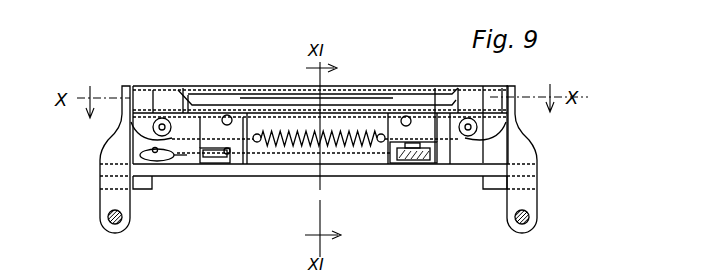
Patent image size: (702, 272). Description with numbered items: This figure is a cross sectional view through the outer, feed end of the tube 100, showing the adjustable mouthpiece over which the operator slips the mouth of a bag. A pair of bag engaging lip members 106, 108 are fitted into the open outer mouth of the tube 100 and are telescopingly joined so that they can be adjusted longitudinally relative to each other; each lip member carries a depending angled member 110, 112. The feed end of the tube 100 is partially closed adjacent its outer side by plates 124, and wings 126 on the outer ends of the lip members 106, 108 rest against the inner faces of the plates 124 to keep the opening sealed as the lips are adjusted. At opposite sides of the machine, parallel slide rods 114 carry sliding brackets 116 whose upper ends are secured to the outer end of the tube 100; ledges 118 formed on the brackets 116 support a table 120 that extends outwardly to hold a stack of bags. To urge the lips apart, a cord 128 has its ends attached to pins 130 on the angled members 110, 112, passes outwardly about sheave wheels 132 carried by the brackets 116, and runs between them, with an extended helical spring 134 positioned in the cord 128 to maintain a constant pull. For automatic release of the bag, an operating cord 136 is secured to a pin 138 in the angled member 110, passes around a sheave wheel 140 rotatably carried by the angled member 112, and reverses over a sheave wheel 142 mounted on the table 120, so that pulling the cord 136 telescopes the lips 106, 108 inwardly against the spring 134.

The tube 100 is at (424, 92).
The lip member 106 is at (192, 102).
The lip member 108 is at (456, 97).
The angled member 110 is at (204, 162).
The angled member 112 is at (404, 164).
The slide rods 114 is at (111, 226).
The sliding brackets 116 is at (104, 152).
The ledges 118 is at (150, 188).
The table 120 is at (383, 172).
The plates 124 is at (140, 90).
The wings 126 is at (162, 95).
The cord 128 is at (160, 137).
The pins 130 is at (227, 116).
The sheave wheels 132 is at (120, 125).
The helical spring 134 is at (355, 128).
The operating cord 136 is at (273, 155).
The pin 138 is at (232, 158).
The sheave wheel 140 is at (437, 146).
The sheave wheel 142 is at (164, 166).